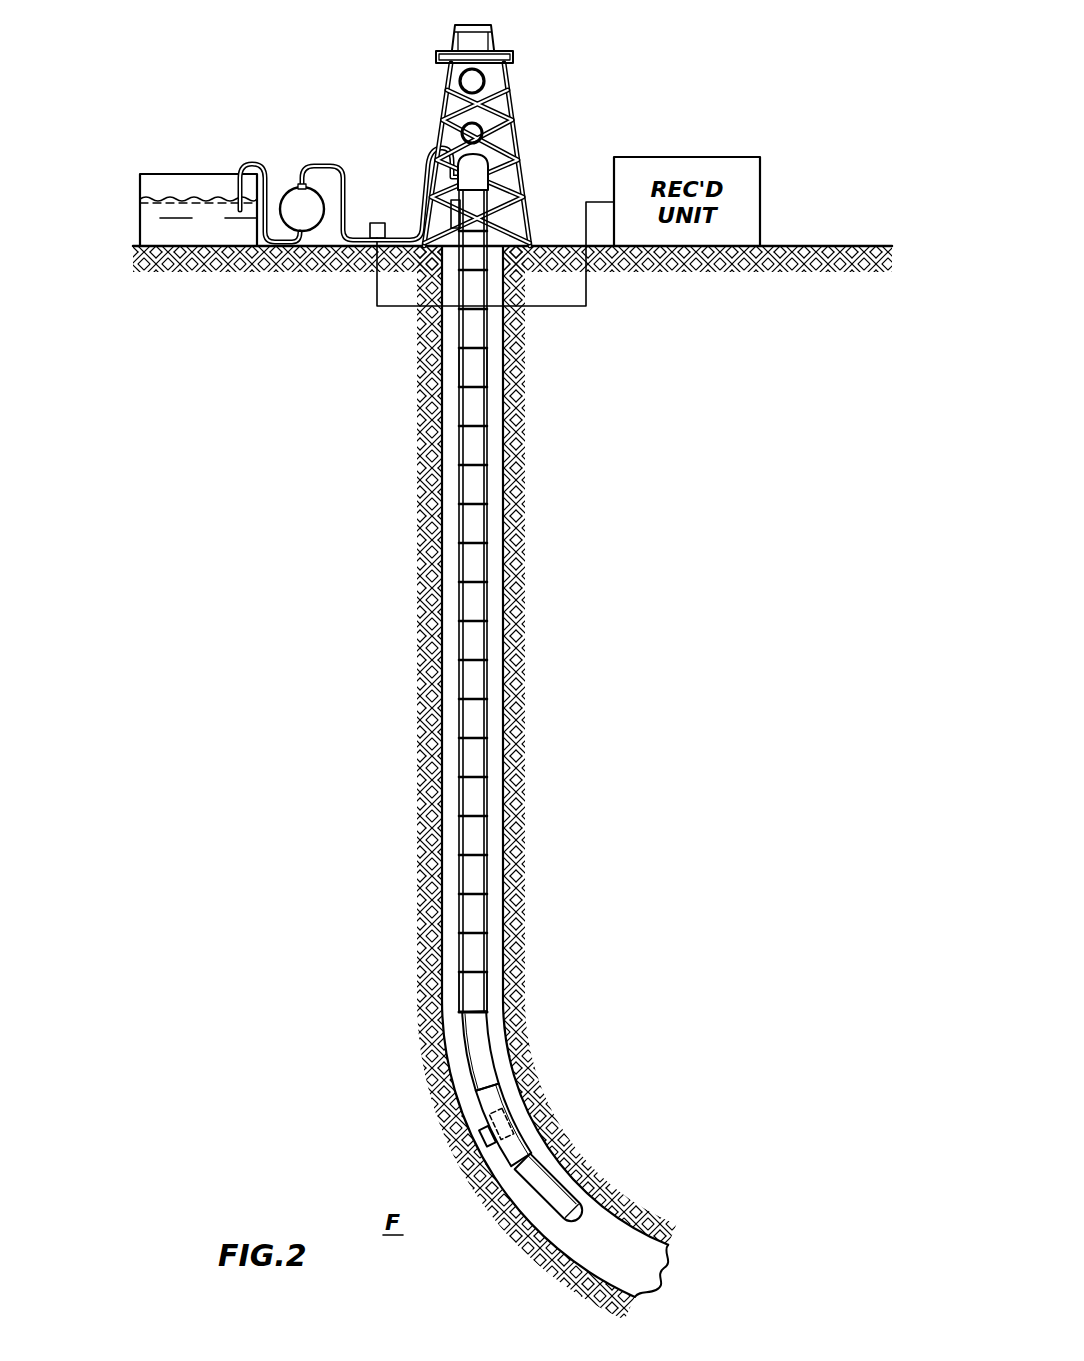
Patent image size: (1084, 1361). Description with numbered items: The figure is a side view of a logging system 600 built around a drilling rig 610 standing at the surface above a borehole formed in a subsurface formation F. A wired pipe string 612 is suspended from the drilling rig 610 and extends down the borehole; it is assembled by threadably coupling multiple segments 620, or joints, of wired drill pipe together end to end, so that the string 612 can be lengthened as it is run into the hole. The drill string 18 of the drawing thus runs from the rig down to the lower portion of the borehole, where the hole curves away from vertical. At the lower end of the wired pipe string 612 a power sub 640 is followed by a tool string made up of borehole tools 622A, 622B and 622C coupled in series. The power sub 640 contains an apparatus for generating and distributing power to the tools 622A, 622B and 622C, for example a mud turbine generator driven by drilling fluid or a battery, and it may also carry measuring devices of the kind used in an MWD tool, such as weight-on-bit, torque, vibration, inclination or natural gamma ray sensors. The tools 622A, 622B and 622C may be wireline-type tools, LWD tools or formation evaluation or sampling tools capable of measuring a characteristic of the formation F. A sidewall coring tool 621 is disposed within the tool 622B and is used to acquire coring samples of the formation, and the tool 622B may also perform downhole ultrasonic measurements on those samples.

The logging system 600 is at (630, 102).
The drilling rig 610 is at (507, 98).
The wired pipe string 612 is at (362, 1013).
The drill string 18 is at (497, 795).
The wired drill pipe segment 620 is at (488, 364).
The power sub 640 is at (488, 992).
The borehole tool 622A is at (487, 1047).
The borehole tool 622B is at (500, 1107).
The borehole tool 622C is at (548, 1170).
The sidewall coring tool 621 is at (478, 1136).